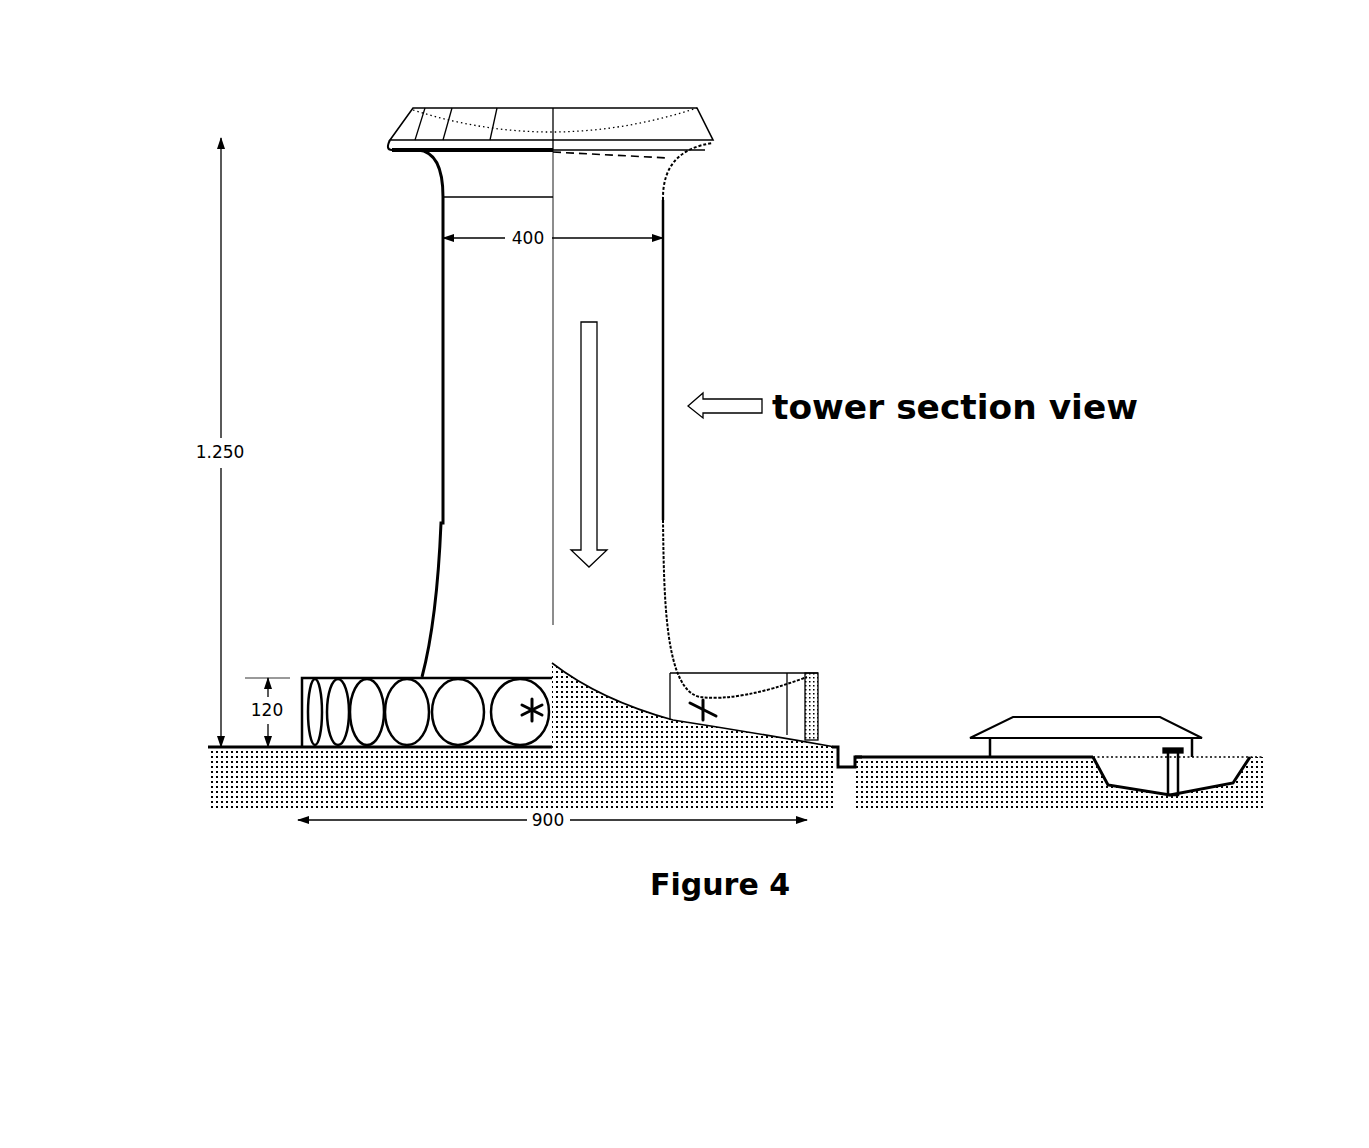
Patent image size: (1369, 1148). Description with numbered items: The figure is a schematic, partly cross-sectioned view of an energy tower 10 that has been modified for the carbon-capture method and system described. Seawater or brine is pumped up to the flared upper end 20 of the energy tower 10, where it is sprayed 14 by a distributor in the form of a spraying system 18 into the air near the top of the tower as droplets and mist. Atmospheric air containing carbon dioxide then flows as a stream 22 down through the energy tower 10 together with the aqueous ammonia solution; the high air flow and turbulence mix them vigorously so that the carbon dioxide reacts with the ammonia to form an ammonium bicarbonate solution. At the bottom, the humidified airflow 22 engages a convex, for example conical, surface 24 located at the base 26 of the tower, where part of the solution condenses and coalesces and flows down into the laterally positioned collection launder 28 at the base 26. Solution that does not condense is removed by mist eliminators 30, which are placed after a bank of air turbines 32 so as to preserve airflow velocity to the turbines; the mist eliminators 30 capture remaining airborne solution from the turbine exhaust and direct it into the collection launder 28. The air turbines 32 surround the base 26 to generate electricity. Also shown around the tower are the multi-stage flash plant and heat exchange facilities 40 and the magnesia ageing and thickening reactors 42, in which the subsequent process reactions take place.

The energy tower 10 is at (432, 370).
The spray 14 is at (715, 188).
The spraying system 18 is at (627, 165).
The flared upper end 20 is at (415, 165).
The air stream 22 is at (602, 444).
The convex surface 24 is at (605, 685).
The base 26 is at (362, 657).
The collection launder 28 is at (843, 745).
The mist eliminators 30 is at (823, 690).
The air turbines 32 is at (287, 727).
The multi-stage flash plant and heat exchange facilities 40 is at (1082, 717).
The magnesia ageing and thickening reactors 42 is at (1228, 750).